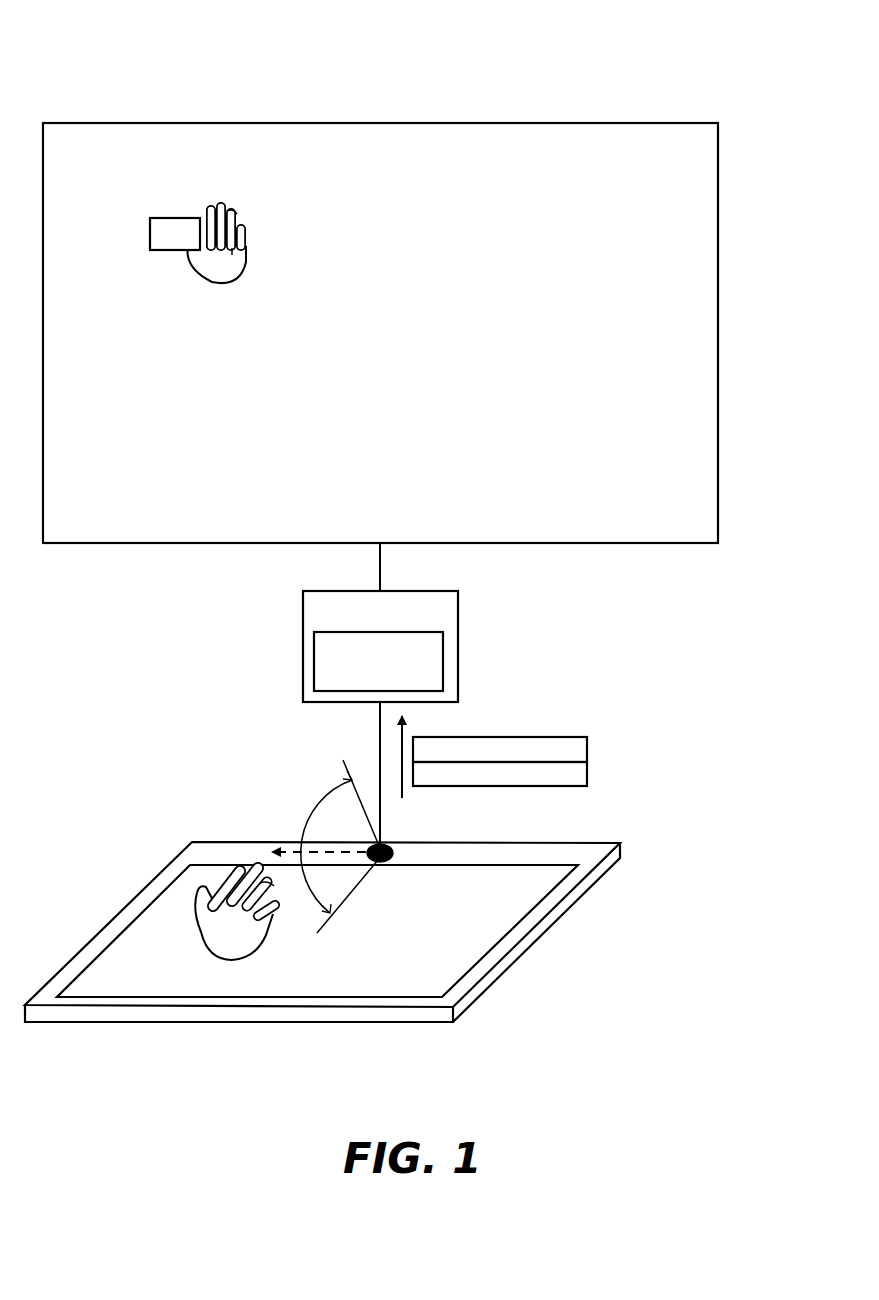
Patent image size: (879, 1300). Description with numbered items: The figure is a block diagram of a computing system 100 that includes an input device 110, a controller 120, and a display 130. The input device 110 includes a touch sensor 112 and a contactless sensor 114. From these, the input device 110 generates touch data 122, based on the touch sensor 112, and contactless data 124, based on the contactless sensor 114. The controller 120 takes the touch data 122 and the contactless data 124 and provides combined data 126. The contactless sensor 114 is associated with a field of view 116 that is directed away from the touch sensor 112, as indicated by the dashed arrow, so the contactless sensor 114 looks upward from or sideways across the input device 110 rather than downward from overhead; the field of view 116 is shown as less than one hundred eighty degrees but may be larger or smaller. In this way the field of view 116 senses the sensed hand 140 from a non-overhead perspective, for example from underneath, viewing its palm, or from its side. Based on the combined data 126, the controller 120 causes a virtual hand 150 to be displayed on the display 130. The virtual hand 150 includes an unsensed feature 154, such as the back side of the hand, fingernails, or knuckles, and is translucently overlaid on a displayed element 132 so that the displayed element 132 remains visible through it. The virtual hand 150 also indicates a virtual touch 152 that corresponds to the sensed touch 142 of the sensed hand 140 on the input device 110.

The computing system 100 is at (133, 33).
The input device 110 is at (334, 916).
The touch sensor 112 is at (530, 921).
The contactless sensor 114 is at (392, 845).
The field of view (FOV) 116 is at (317, 749).
The controller 120 is at (413, 638).
The touch data 122 is at (587, 745).
The contactless data 124 is at (587, 772).
The combined data 126 is at (443, 661).
The display 130 is at (691, 123).
The displayed element 132 is at (175, 250).
The sensed hand 140 is at (251, 920).
The sensed touch 142 is at (264, 884).
The virtual hand 150 is at (205, 243).
The virtual touch 152 is at (234, 212).
The unsensed feature 154 is at (228, 256).